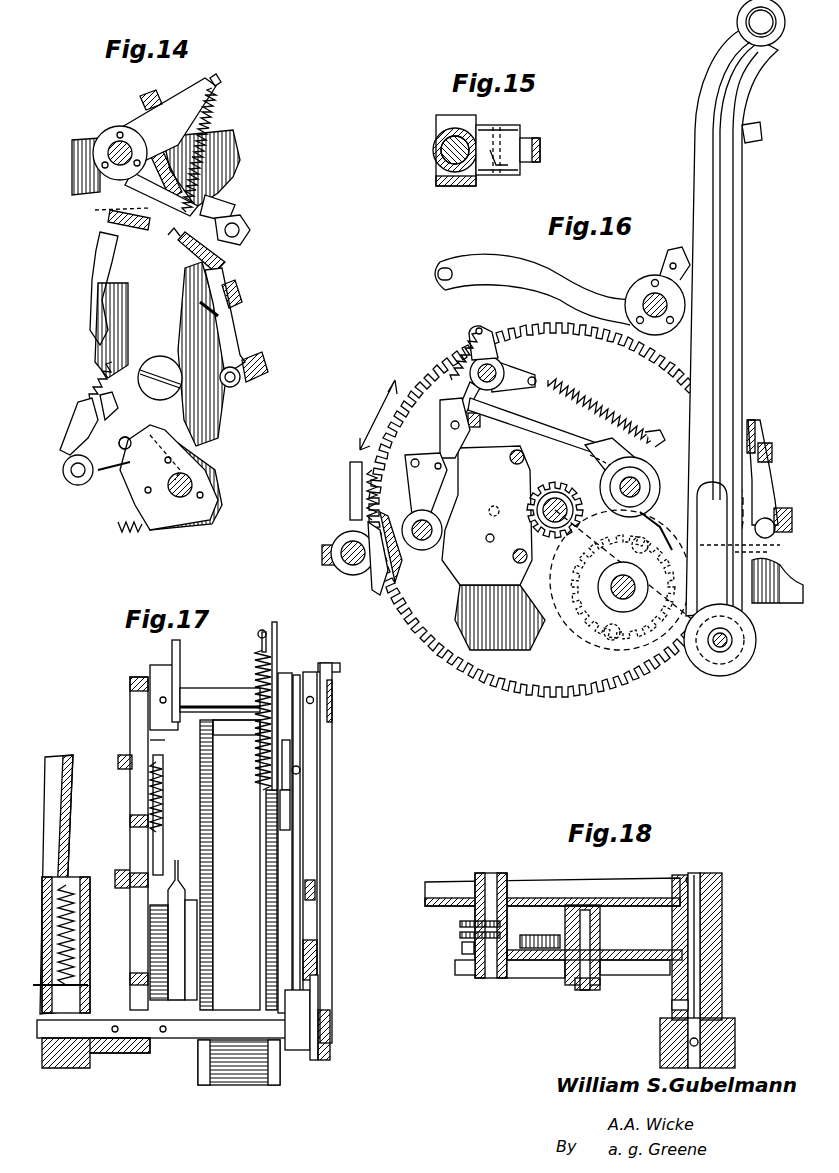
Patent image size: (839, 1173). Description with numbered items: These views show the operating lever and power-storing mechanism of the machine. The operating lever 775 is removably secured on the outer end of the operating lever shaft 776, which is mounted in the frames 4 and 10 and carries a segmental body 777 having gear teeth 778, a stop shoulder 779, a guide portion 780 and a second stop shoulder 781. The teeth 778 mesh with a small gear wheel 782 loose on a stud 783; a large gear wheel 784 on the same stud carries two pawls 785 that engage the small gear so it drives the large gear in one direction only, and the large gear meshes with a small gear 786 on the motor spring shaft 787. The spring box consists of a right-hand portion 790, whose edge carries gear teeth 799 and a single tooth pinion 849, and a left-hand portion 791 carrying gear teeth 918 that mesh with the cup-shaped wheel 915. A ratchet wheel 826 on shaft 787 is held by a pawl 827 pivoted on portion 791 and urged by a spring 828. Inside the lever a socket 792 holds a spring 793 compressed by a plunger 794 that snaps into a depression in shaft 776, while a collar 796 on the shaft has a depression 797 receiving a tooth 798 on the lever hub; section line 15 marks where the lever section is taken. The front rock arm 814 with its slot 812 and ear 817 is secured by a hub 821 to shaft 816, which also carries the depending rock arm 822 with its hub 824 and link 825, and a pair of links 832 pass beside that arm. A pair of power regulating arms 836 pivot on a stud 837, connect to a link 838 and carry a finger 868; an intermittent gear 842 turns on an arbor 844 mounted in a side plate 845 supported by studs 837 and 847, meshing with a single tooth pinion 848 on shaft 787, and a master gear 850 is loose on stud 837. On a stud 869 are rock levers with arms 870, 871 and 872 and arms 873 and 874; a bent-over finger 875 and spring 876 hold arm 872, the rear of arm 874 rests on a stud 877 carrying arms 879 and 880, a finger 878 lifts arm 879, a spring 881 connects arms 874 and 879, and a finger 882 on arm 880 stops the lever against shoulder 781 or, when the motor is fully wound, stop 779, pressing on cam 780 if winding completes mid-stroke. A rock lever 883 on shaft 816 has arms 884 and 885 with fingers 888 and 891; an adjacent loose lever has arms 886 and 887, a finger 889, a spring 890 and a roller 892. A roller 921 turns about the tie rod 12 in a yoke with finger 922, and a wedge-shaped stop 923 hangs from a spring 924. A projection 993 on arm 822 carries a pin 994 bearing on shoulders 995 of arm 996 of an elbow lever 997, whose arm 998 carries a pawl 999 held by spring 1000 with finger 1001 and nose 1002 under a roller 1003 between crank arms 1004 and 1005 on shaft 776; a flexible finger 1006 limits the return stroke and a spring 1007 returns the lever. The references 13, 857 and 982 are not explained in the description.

In FIG. 17, the frame 4 is at (130, 725).
In FIG. 18, the frame 4 is at (530, 970).
In FIG. 14, the frame 10 is at (212, 422).
In FIG. 17, the frame 10 is at (334, 862).
In FIG. 16, the tie rod 12 is at (335, 548).
In FIG. 16, the gear 13 is at (560, 500).
In FIG. 17, the section line 15 is at (69, 979).
In FIG. 15, the operating lever 775 is at (458, 182).
In FIG. 16, the operating lever 775 is at (737, 345).
In FIG. 17, the operating lever 775 is at (58, 760).
In FIG. 18, the operating lever 775 is at (722, 1047).
In FIG. 14, the operating lever shaft 776 is at (192, 482).
In FIG. 15, the operating lever shaft 776 is at (542, 150).
In FIG. 16, the operating lever shaft 776 is at (735, 641).
In FIG. 17, the operating lever shaft 776 is at (45, 1060).
In FIG. 18, the operating lever shaft 776 is at (722, 1031).
In FIG. 16, the segmental body 777 is at (745, 622).
In FIG. 17, the segmental body 777 is at (183, 1029).
In FIG. 18, the segmental body 777 is at (722, 924).
In FIG. 16, the gear teeth 778 is at (625, 568).
In FIG. 16, the stop shoulder 779 is at (772, 560).
In FIG. 16, the guide portion 780 is at (778, 585).
In FIG. 17, the guide portion 780 is at (215, 880).
In FIG. 16, the second stop shoulder 781 is at (785, 605).
In FIG. 17, the second stop shoulder 781 is at (215, 960).
In FIG. 16, the small gear wheel 782 is at (610, 585).
In FIG. 18, the small gear wheel 782 is at (598, 905).
In FIG. 16, the stud 783 is at (612, 592).
In FIG. 17, the stud 783 is at (150, 960).
In FIG. 18, the stud 783 is at (602, 978).
In FIG. 16, the large gear wheel 784 is at (600, 605).
In FIG. 17, the large gear wheel 784 is at (152, 945).
In FIG. 18, the large gear wheel 784 is at (548, 945).
In FIG. 16, the pawls 785 is at (600, 575).
In FIG. 17, the pawls 785 is at (135, 955).
In FIG. 16, the small gear 786 is at (605, 578).
In FIG. 18, the small gear 786 is at (462, 948).
In FIG. 18, the motor spring shaft 787 is at (455, 968).
In FIG. 16, the right-hand portion of spring box 790 is at (547, 370).
In FIG. 17, the right-hand portion of spring box 790 is at (266, 822).
In FIG. 18, the right-hand portion of spring box 790 is at (455, 892).
In FIG. 17, the left-hand portion of spring box 791 is at (270, 1080).
In FIG. 15, the socket 792 is at (445, 138).
In FIG. 17, the socket 792 is at (115, 880).
In FIG. 17, the spring 793 is at (72, 895).
In FIG. 15, the plunger or detent 794 is at (441, 152).
In FIG. 17, the plunger or detent 794 is at (70, 985).
In FIG. 15, the collar 796 is at (512, 138).
In FIG. 17, the collar 796 is at (95, 1055).
In FIG. 18, the collar 796 is at (722, 1003).
In FIG. 15, the depression 797 is at (497, 172).
In FIG. 18, the depression 797 is at (672, 1006).
In FIG. 15, the tooth 798 is at (490, 130).
In FIG. 17, the tooth 798 is at (88, 1065).
In FIG. 16, the gear teeth 799 is at (545, 333).
In FIG. 17, the gear teeth 799 is at (215, 840).
In FIG. 18, the gear teeth 799 is at (695, 882).
In FIG. 16, the slot 812 is at (438, 270).
In FIG. 16, the front rock arm 814 is at (586, 303).
In FIG. 17, the front rock arm 814 is at (180, 675).
In FIG. 14, the shaft 816 is at (108, 147).
In FIG. 16, the shaft 816 is at (690, 305).
In FIG. 17, the shaft 816 is at (220, 693).
In FIG. 16, the ear 817 is at (682, 268).
In FIG. 16, the hubs 821 is at (680, 322).
In FIG. 17, the hubs 821 is at (155, 680).
In FIG. 14, the front depending rock arm 822 is at (228, 330).
In FIG. 16, the front depending rock arm 822 is at (762, 475).
In FIG. 17, the front depending rock arm 822 is at (318, 735).
In FIG. 17, the hubs 824 is at (332, 712).
In FIG. 14, the link 825 is at (262, 358).
In FIG. 16, the link 825 is at (783, 508).
In FIG. 17, the link 825 is at (315, 900).
In FIG. 17, the ratchet wheel 826 is at (317, 840).
In FIG. 17, the pawl 827 is at (280, 808).
In FIG. 17, the spring 828 is at (300, 745).
In FIG. 14, the pair of links 832 is at (240, 295).
In FIG. 17, the pair of links 832 is at (318, 878).
In FIG. 16, the power regulating arms 836 is at (432, 440).
In FIG. 16, the stud 837 is at (434, 530).
In FIG. 16, the link 838 is at (580, 402).
In FIG. 16, the intermittent gear wheel 842 is at (530, 530).
In FIG. 16, the arbor 844 is at (482, 522).
In FIG. 16, the side plate 845 is at (504, 479).
In FIG. 16, the stud 847 is at (525, 460).
In FIG. 17, the single tooth pinion 848 is at (178, 860).
In FIG. 18, the single tooth pinion 848 is at (460, 935).
In FIG. 17, the single tooth pinion 849 is at (215, 860).
In FIG. 18, the single tooth pinion 849 is at (460, 922).
In FIG. 16, the master gear wheel 850 is at (484, 548).
In FIG. 16, the rack 857 is at (408, 615).
In FIG. 16, the finger 868 is at (447, 415).
In FIG. 16, the stud 869 is at (466, 346).
In FIG. 17, the stud 869 is at (118, 760).
In FIG. 16, the front arm 870 is at (426, 380).
In FIG. 16, the lower arm 871 is at (476, 415).
In FIG. 16, the rear arm 872 is at (530, 375).
In FIG. 16, the front arm 873 is at (474, 330).
In FIG. 17, the front arm 873 is at (150, 740).
In FIG. 16, the rear arm 874 is at (605, 454).
In FIG. 17, the rear arm 874 is at (140, 845).
In FIG. 16, the bent-over finger 875 is at (518, 408).
In FIG. 16, the spring 876 is at (452, 368).
In FIG. 16, the stud 877 is at (642, 487).
In FIG. 16, the bent-over finger 878 is at (596, 467).
In FIG. 16, the front arm 879 is at (600, 488).
In FIG. 17, the front arm 879 is at (163, 830).
In FIG. 16, the rear arm 880 is at (660, 522).
In FIG. 17, the rear arm 880 is at (150, 920).
In FIG. 16, the spring 881 is at (612, 420).
In FIG. 17, the spring 881 is at (162, 800).
In FIG. 16, the bent-over finger 882 is at (772, 547).
In FIG. 14, the rock lever 883 is at (150, 178).
In FIG. 14, the upper rear arm 884 is at (186, 100).
In FIG. 17, the upper rear arm 884 is at (278, 648).
In FIG. 14, the lower rear arm 885 is at (138, 195).
In FIG. 14, the upper arm 886 is at (142, 103).
In FIG. 17, the upper arm 886 is at (278, 630).
In FIG. 14, the lower arm 887 is at (210, 258).
In FIG. 17, the lower arm 887 is at (318, 660).
In FIG. 14, the bent-over finger 888 is at (218, 86).
In FIG. 17, the bent-over finger 888 is at (265, 628).
In FIG. 17, the finger 889 is at (280, 795).
In FIG. 14, the spring 890 is at (214, 110).
In FIG. 17, the spring 890 is at (255, 652).
In FIG. 14, the finger 891 is at (222, 206).
In FIG. 14, the roller 892 is at (243, 232).
In FIG. 17, the roller 892 is at (292, 762).
In FIG. 16, the cup-shaped wheel 915 is at (345, 566).
In FIG. 16, the gear teeth 918 is at (390, 578).
In FIG. 16, the roller 921 is at (372, 582).
In FIG. 16, the finger 922 is at (352, 518).
In FIG. 16, the wedge-shaped movable stop 923 is at (362, 498).
In FIG. 16, the spring 924 is at (368, 477).
In FIG. 17, the plate 982 is at (295, 803).
In FIG. 14, the projection 993 is at (98, 250).
In FIG. 14, the pin 994 is at (129, 220).
In FIG. 17, the pin 994 is at (302, 770).
In FIG. 14, the shoulders 995 is at (110, 212).
In FIG. 14, the arm 996 is at (130, 252).
In FIG. 17, the arm 996 is at (310, 790).
In FIG. 14, the elbow lever 997 is at (100, 368).
In FIG. 17, the elbow lever 997 is at (318, 890).
In FIG. 14, the lower front arm 998 is at (70, 440).
In FIG. 14, the pawl 999 is at (105, 432).
In FIG. 14, the spring 1000 is at (95, 392).
In FIG. 14, the bent-over finger 1001 is at (85, 413).
In FIG. 14, the nose 1002 is at (135, 478).
In FIG. 14, the roller 1003 is at (170, 452).
In FIG. 17, the roller 1003 is at (312, 978).
In FIG. 14, the rocking plate or crank arm 1004 is at (127, 438).
In FIG. 17, the rocking plate or crank arm 1004 is at (318, 995).
In FIG. 14, the crank arm 1005 is at (175, 500).
In FIG. 17, the crank arm 1005 is at (320, 1010).
In FIG. 14, the flexible finger 1006 is at (140, 424).
In FIG. 14, the spring 1007 is at (118, 528).